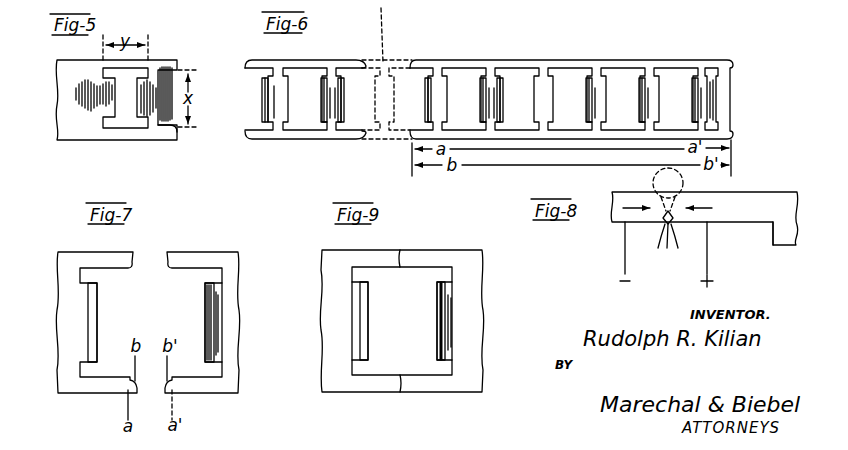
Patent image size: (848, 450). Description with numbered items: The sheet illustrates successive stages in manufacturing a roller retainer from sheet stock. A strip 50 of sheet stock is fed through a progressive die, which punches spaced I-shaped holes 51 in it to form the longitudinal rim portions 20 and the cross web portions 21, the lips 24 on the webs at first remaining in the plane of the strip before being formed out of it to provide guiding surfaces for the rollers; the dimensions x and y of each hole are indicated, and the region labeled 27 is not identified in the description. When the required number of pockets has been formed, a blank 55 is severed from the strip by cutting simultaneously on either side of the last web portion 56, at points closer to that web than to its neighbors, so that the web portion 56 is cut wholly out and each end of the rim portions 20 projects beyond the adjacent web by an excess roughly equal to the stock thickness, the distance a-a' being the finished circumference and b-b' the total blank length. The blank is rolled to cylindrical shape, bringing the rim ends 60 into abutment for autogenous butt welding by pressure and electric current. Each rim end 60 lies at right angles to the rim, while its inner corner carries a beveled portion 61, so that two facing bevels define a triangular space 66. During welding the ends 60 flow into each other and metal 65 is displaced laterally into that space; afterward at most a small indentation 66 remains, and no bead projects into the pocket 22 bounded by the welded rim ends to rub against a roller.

In FIG. 6, the rim portions 20 is at (261, 140).
In FIG. 7, the rim portions 20 is at (84, 258).
In FIG. 9, the rim portions 20 is at (348, 388).
In FIG. 8, the rim portions 20 is at (612, 224).
In FIG. 5, the web portions 21 is at (162, 60).
In FIG. 6, the web portions 21 is at (545, 80).
In FIG. 7, the web portions 21 is at (230, 334).
In FIG. 9, the web portions 21 is at (348, 327).
In FIG. 8, the web portions 21 is at (776, 243).
In FIG. 6, the pocket 22 is at (676, 77).
In FIG. 5, the lips 24 is at (136, 118).
In FIG. 6, the lips 24 is at (482, 80).
In FIG. 7, the lips 24 is at (96, 318).
In FIG. 9, the lips 24 is at (437, 332).
In FIG. 5, the end block 27 is at (168, 137).
In FIG. 6, the end block 27 is at (592, 71).
In FIG. 5, the strip 50 is at (72, 128).
In FIG. 5, the I-shaped holes 51 is at (123, 97).
In FIG. 6, the blank 55 is at (710, 48).
In FIG. 7, the blank 55 is at (245, 396).
In FIG. 6, the last web portion 56 is at (382, 31).
In FIG. 6, the abutting rim ends 60 is at (366, 60).
In FIG. 7, the abutting rim ends 60 is at (164, 254).
In FIG. 8, the abutting rim ends 60 is at (668, 188).
In FIG. 7, the beveled portion 61 is at (166, 272).
In FIG. 8, the beveled portion 61 is at (664, 244).
In FIG. 8, the displaced metal 65 is at (667, 250).
In FIG. 9, the triangular space 66 is at (400, 267).